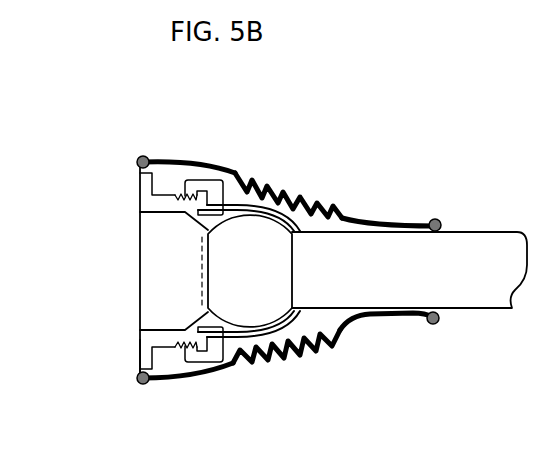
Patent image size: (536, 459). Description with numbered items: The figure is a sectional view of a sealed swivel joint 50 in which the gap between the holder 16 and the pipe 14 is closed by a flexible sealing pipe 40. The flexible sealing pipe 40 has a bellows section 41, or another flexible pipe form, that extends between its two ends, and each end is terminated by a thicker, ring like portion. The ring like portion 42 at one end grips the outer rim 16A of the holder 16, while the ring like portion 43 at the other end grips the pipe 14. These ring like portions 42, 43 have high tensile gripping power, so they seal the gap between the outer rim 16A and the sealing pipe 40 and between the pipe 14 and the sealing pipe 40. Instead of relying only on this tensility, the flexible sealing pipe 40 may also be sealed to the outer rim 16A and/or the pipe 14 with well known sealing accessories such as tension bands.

The pipe 14 is at (480, 283).
The holder 16 is at (140, 190).
The outer rim 16A is at (140, 372).
The flexible sealing pipe 40 is at (232, 170).
The bellows section 41 is at (300, 183).
The ring like portion 42 is at (148, 150).
The ring like portion 43 is at (438, 218).
The sealed swivel joint 50 is at (462, 118).